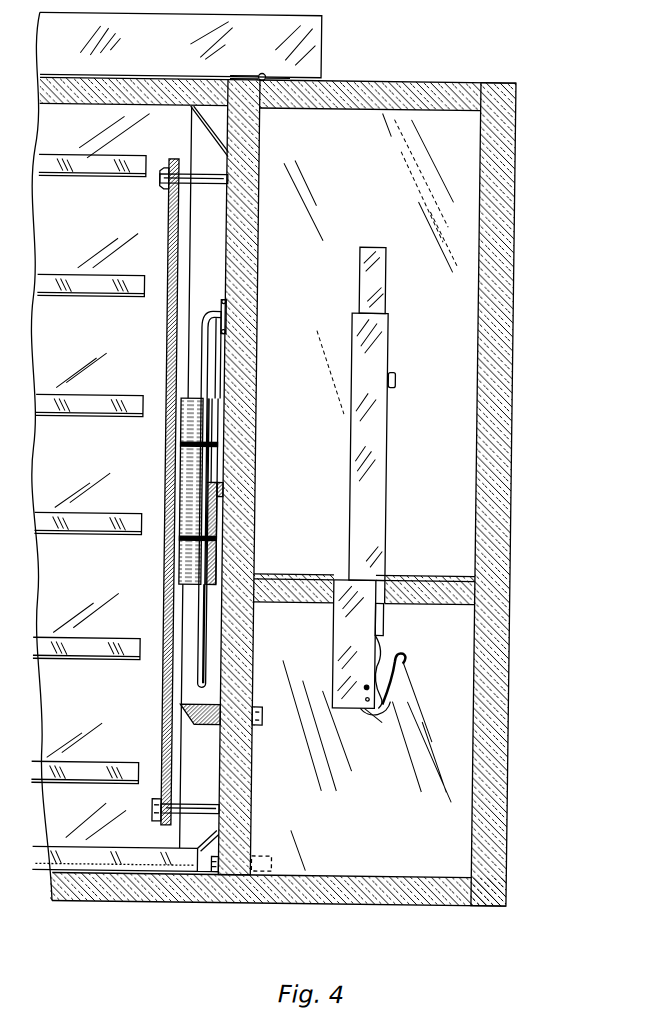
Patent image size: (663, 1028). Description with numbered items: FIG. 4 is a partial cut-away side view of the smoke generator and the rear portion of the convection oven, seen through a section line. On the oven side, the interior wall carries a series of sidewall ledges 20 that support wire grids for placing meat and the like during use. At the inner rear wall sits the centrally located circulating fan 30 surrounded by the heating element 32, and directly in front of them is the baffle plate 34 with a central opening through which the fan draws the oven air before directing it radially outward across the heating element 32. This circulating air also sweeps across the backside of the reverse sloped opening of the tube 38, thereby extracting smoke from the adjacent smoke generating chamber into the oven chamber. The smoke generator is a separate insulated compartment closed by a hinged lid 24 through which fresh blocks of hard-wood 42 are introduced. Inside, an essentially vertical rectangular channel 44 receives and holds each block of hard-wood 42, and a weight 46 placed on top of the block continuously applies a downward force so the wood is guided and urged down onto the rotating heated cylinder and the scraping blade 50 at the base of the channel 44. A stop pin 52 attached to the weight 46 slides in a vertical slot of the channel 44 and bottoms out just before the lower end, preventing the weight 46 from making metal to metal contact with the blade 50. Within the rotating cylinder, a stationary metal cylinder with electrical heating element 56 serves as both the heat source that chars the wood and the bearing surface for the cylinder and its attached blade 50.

The sidewall ledges 20 is at (50, 280).
The hinged lid 24 is at (364, 92).
The circulating fan 30 is at (192, 468).
The heating element 32 is at (215, 368).
The baffle plate 34 is at (176, 762).
The tube 38 is at (264, 706).
The block of hard-wood 42 is at (392, 655).
The vertical rectangular tube or channel 44 is at (376, 352).
The weight 46 is at (376, 247).
The scraping blade 50 is at (391, 706).
The stop pin 52 is at (398, 387).
The electrical heating element 56 is at (390, 692).